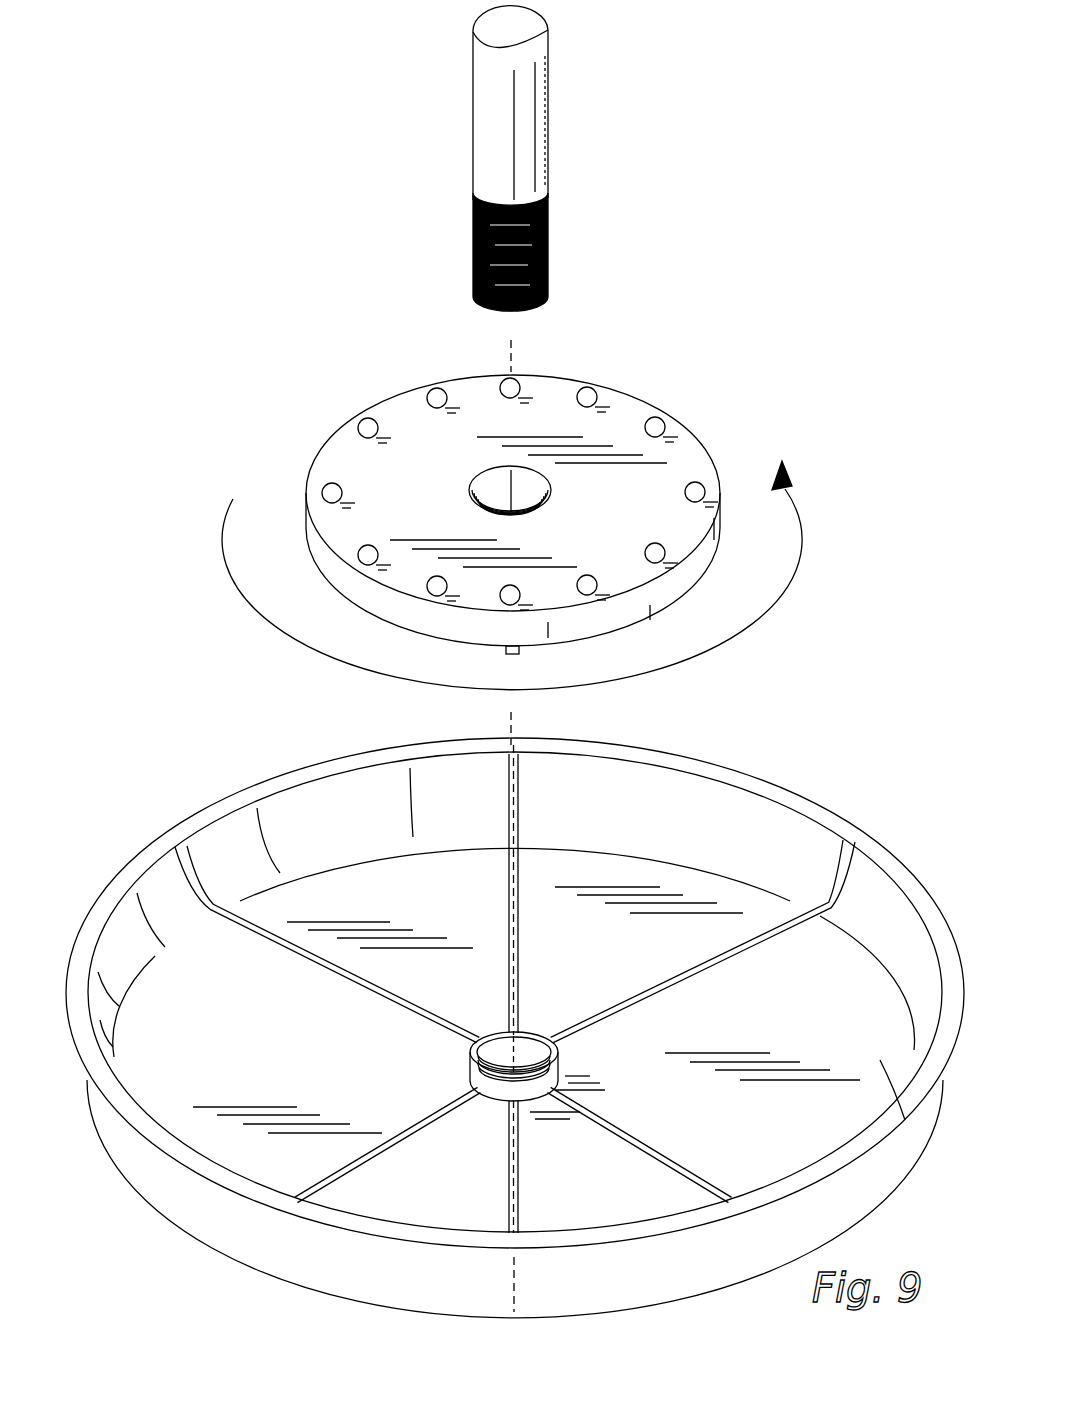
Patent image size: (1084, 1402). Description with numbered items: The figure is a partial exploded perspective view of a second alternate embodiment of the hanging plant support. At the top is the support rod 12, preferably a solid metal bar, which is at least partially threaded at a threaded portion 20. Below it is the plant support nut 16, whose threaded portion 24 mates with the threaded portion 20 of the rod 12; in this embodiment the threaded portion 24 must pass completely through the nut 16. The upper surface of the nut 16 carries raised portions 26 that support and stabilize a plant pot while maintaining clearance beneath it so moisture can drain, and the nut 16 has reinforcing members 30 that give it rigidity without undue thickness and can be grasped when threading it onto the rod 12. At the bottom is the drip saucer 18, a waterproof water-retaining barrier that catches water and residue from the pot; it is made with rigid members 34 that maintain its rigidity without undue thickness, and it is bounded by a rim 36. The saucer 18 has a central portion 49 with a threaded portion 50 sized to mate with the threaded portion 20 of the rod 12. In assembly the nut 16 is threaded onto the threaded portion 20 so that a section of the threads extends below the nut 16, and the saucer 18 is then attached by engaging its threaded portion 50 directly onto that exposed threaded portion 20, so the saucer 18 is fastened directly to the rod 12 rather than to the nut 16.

The support rod 12 is at (485, 96).
The threaded portion 20 is at (548, 228).
The plant support nut 16 is at (444, 504).
The raised portions 26 is at (432, 391).
The threaded portion of nut 24 is at (546, 476).
The reinforcing members 30 is at (512, 655).
The drip saucer 18 is at (662, 818).
The rim of tray 36 is at (755, 783).
The rigid members 34 is at (386, 1016).
The central portion 49 is at (470, 1067).
The threaded portion of saucer 50 is at (532, 1034).